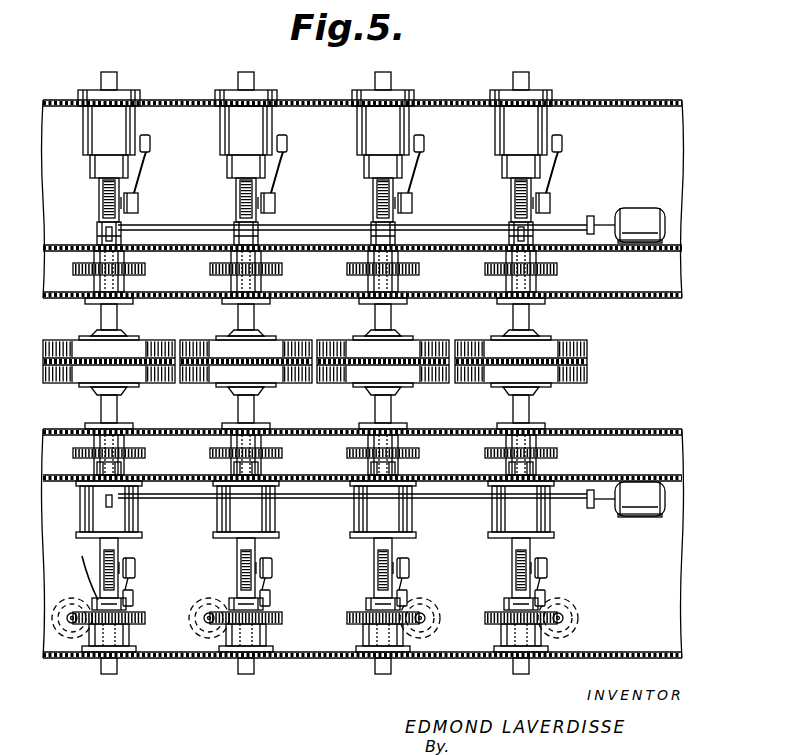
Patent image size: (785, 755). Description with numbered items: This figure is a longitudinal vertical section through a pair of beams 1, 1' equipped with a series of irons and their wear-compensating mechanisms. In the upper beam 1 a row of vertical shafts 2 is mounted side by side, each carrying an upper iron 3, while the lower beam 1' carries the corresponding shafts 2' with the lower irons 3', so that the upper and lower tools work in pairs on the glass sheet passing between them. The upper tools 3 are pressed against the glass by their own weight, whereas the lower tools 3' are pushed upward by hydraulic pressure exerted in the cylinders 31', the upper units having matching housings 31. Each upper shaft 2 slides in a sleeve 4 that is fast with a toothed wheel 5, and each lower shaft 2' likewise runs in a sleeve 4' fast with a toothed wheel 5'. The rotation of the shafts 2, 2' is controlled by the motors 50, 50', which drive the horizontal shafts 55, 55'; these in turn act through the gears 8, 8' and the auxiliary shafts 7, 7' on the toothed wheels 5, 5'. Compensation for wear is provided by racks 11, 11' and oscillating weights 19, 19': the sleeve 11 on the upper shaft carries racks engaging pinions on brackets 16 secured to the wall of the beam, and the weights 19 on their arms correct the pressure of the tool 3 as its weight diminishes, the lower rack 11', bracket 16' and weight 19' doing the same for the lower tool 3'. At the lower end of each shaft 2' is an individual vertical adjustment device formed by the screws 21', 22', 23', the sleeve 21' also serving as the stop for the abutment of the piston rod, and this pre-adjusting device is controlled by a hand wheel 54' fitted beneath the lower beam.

The beam 1 is at (363, 175).
The beam 1' is at (363, 519).
The vertical shaft 2 is at (251, 319).
The shaft 2' is at (248, 406).
The upper iron 3 is at (177, 344).
The lower iron 3' is at (445, 382).
The sleeve 4 is at (87, 271).
The sleeve 4' is at (225, 435).
The toothed wheel 5 is at (177, 266).
The toothed wheel 5' is at (177, 455).
The auxiliary shaft 7 is at (86, 236).
The auxiliary shaft 7' is at (82, 462).
The gears 8 is at (295, 218).
The gears 8' is at (79, 513).
The sleeve 11 is at (84, 200).
The rack 11' is at (220, 568).
The bracket 16 is at (363, 197).
The bracket 16' is at (356, 561).
The weight 19 is at (161, 164).
The weight 19' is at (222, 587).
The sleeve 21' is at (99, 573).
The screw 22' is at (246, 655).
The screw 23' is at (333, 603).
The cylinder 31 is at (314, 142).
The hydraulic cylinder 31' is at (314, 510).
The motor 50 is at (626, 203).
The motor 50' is at (626, 519).
The hand wheel 54' is at (319, 663).
The horizontal shaft 55 is at (352, 211).
The horizontal shaft 55' is at (352, 515).